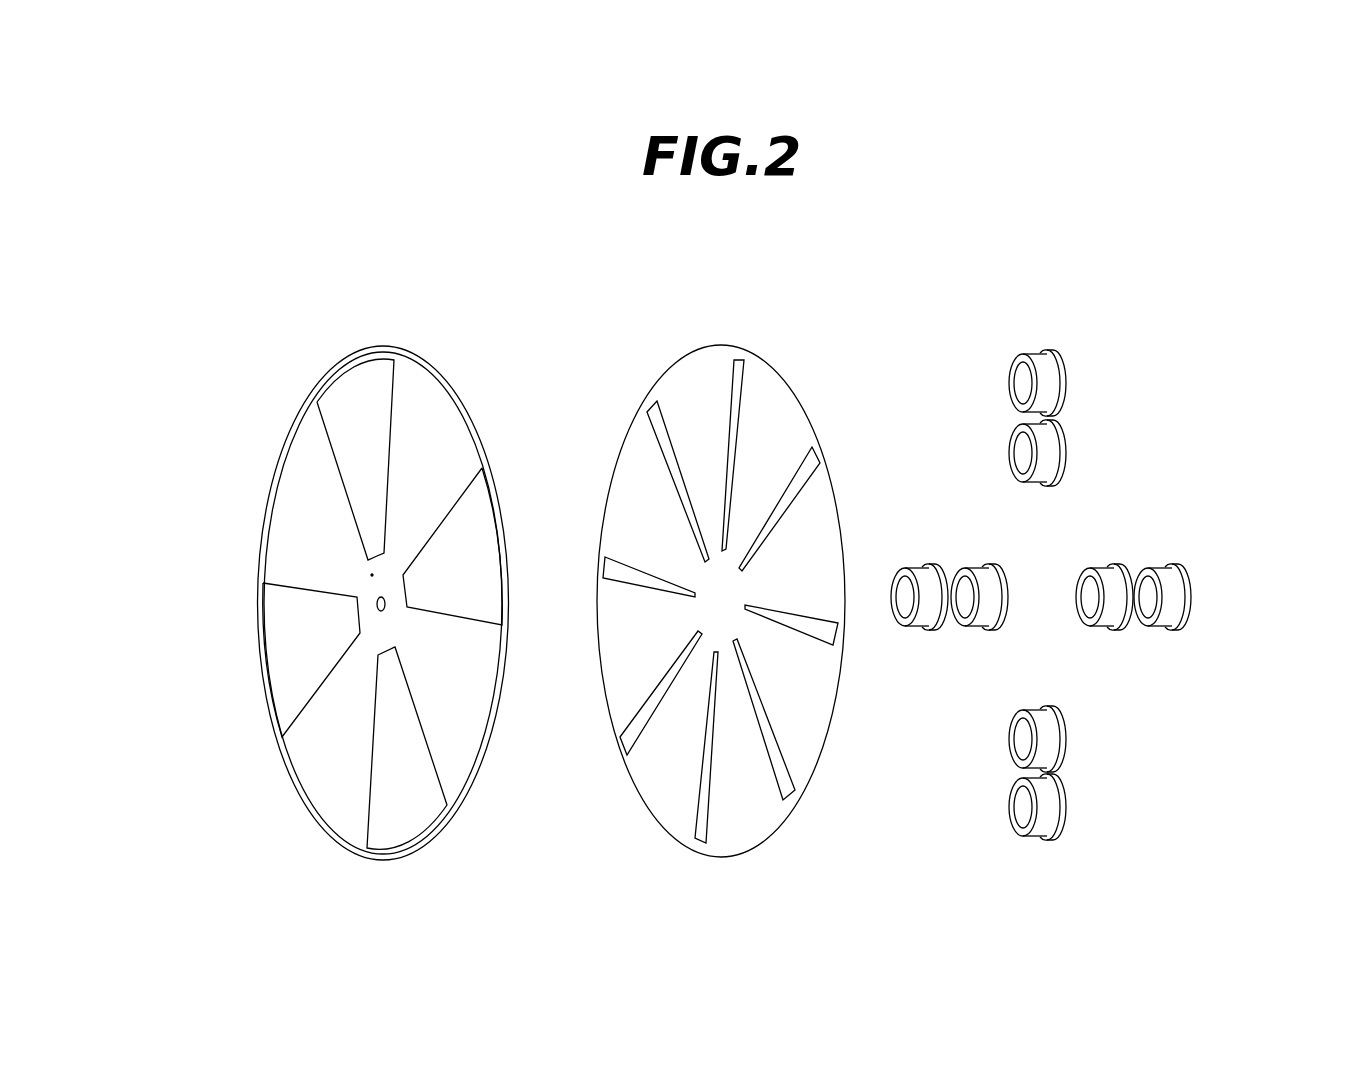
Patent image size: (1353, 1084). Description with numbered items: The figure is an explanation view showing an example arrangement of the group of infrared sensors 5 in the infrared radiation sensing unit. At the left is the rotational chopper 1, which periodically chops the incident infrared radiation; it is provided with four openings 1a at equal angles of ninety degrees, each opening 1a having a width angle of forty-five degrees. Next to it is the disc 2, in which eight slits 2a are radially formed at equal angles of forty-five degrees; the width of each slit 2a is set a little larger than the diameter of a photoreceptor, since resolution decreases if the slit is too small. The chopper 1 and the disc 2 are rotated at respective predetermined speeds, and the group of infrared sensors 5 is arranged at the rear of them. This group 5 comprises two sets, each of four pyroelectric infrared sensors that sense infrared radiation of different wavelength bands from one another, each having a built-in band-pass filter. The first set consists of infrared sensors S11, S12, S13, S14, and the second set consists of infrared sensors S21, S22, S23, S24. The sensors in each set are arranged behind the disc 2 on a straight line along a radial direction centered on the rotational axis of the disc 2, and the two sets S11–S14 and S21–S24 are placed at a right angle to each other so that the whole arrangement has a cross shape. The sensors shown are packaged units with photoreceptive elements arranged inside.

The rotational chopper 1 is at (373, 602).
The opening 1a is at (320, 412).
The disc 2 is at (711, 572).
The slit 2a is at (733, 372).
The group of infrared sensors 5 is at (1076, 544).
The infrared sensor S11 is at (1008, 383).
The infrared sensor S12 is at (1007, 456).
The infrared sensor S13 is at (1008, 742).
The infrared sensor S14 is at (1010, 815).
The infrared sensor S21 is at (902, 625).
The infrared sensor S22 is at (963, 625).
The infrared sensor S23 is at (1087, 625).
The infrared sensor S24 is at (1143, 625).